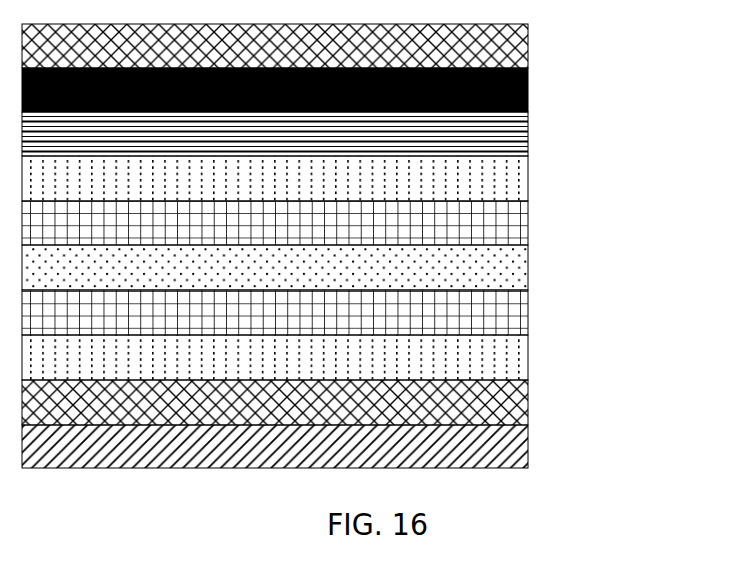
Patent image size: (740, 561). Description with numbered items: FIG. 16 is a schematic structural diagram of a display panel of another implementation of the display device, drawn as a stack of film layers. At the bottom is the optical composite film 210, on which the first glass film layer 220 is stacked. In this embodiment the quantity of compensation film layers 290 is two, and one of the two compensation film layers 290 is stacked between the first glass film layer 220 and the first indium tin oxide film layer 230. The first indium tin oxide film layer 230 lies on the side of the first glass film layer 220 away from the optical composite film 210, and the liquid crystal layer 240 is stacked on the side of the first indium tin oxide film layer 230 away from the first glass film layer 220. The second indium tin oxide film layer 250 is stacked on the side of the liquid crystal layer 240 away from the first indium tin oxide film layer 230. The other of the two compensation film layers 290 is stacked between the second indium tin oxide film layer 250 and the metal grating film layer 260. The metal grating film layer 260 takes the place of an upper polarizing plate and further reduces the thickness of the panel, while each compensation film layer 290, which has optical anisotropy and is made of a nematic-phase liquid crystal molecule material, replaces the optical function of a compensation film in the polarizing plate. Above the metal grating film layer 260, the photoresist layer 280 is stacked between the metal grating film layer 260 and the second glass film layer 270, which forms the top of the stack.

The optical composite film 210 is at (528, 450).
The first glass film layer 220 is at (528, 407).
The first indium tin oxide film layer 230 is at (528, 313).
The liquid crystal layer 240 is at (528, 268).
The second indium tin oxide film layer 250 is at (528, 227).
The metal grating film layer 260 is at (528, 140).
The second glass film layer 270 is at (528, 51).
The photoresist layer 280 is at (528, 93).
The compensation film layer 290 is at (528, 183).